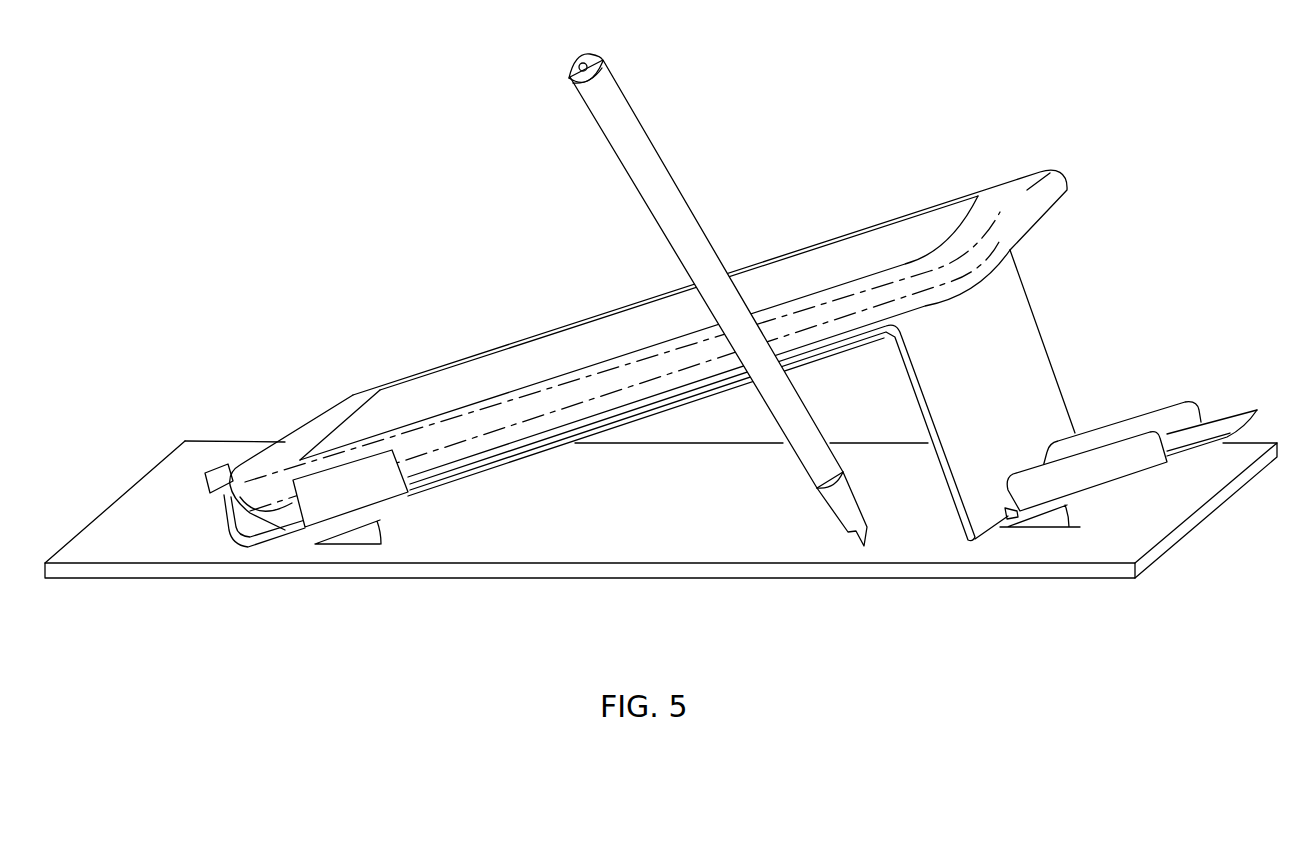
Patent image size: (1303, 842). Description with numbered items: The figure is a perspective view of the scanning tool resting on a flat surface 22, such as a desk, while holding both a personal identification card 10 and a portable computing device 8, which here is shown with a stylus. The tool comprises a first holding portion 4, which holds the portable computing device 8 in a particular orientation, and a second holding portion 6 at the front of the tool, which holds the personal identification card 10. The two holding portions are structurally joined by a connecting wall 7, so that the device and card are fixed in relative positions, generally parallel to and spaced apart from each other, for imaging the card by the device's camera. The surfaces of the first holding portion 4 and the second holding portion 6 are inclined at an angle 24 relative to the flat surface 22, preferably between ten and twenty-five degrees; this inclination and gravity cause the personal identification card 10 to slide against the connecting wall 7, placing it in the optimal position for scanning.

The first holding portion 4 is at (488, 470).
The second holding portion 6 is at (1117, 468).
The connecting wall 7 is at (933, 387).
The portable computing device 8 is at (563, 345).
The personal identification card 10 is at (1217, 425).
The flat surface 22 is at (660, 523).
The angle 24 is at (709, 524).